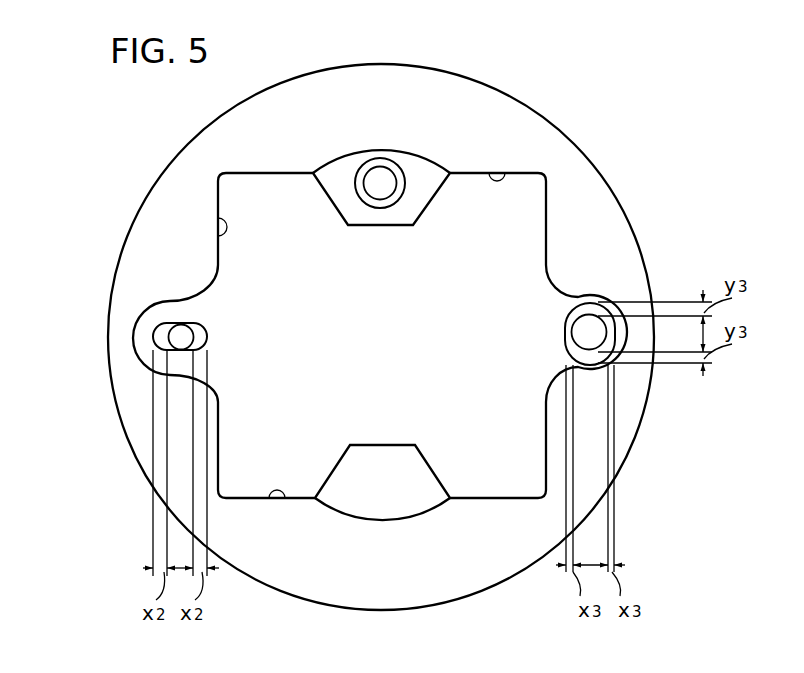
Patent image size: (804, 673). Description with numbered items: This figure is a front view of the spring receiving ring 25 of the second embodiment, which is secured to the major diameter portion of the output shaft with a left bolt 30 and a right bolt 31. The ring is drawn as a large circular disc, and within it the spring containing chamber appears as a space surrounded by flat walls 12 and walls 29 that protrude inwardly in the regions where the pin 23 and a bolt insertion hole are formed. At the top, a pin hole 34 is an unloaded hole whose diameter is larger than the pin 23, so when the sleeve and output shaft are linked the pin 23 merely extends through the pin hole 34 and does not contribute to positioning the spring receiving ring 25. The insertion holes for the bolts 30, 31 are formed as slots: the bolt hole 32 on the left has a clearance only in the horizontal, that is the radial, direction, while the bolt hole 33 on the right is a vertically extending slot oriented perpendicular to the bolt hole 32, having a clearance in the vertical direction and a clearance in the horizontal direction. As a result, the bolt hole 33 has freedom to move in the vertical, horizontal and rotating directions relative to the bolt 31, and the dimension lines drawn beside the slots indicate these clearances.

The flat wall 12 is at (218, 215).
The pin 23 is at (397, 183).
The spring receiving ring 25 is at (313, 92).
The wall 29 is at (497, 173).
The bolt 30 is at (168, 323).
The bolt 31 is at (585, 315).
The bolt hole 32 is at (153, 334).
The bolt hole 33 is at (590, 303).
The pin hole 34 is at (385, 158).